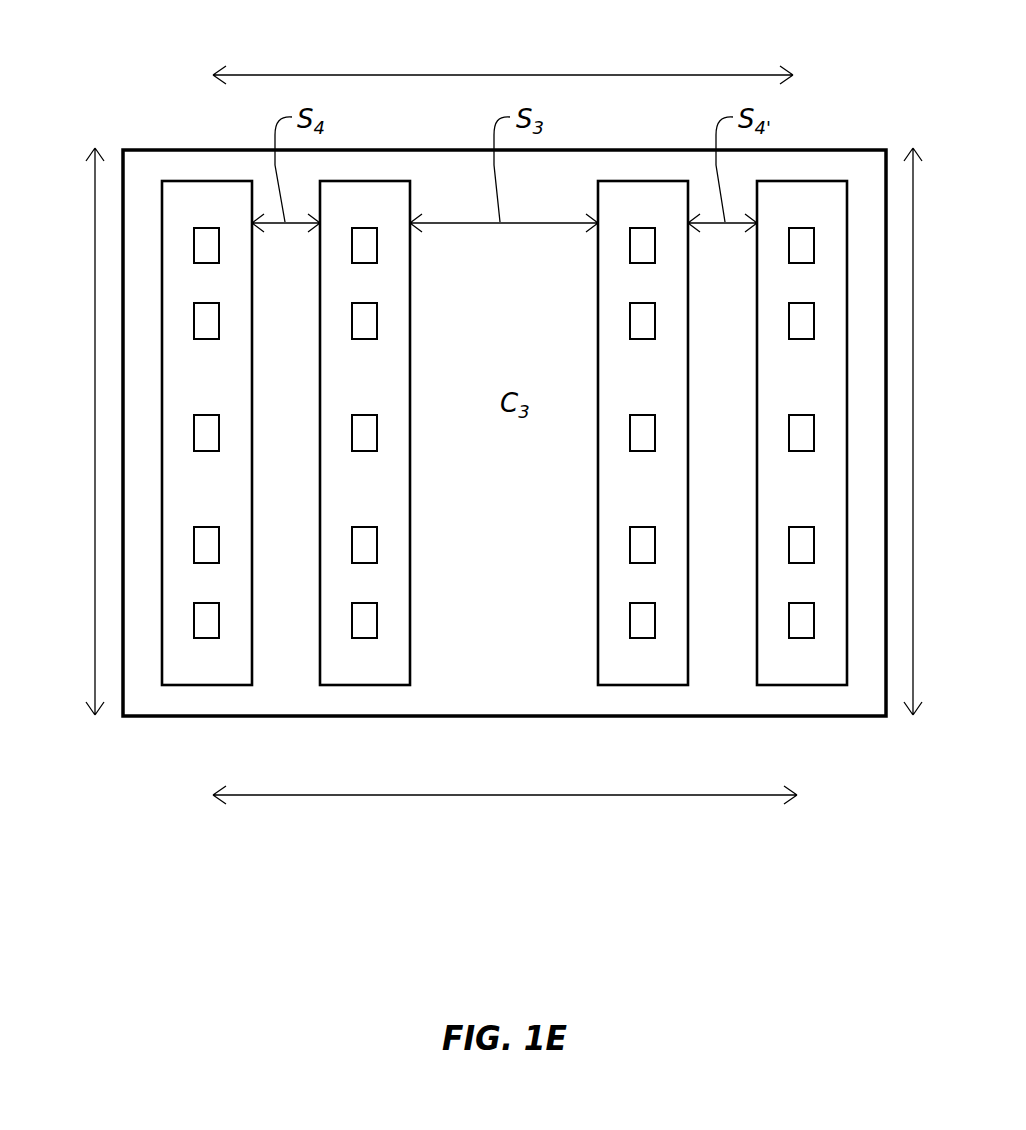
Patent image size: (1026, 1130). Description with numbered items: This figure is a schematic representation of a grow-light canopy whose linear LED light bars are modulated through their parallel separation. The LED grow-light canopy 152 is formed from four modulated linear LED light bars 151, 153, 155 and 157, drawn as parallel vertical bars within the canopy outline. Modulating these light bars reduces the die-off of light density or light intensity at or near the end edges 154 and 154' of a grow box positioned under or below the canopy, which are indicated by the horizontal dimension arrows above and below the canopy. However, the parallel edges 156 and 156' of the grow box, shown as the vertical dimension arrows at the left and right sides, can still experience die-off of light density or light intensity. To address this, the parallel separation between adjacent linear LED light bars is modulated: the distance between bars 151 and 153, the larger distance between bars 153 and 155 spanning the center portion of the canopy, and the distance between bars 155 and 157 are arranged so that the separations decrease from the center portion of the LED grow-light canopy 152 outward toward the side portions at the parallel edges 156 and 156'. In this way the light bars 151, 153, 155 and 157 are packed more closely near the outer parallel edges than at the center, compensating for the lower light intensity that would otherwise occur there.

The modulated linear LED light bar 151 is at (207, 685).
The LED grow-light canopy 152 is at (834, 150).
The modulated linear LED light bar 153 is at (350, 685).
The end edge 154 is at (503, 51).
The end edge 154' is at (505, 832).
The modulated linear LED light bar 155 is at (650, 685).
The parallel edge 156 is at (88, 462).
The parallel edge 156' is at (915, 474).
The modulated linear LED light bar 157 is at (836, 685).